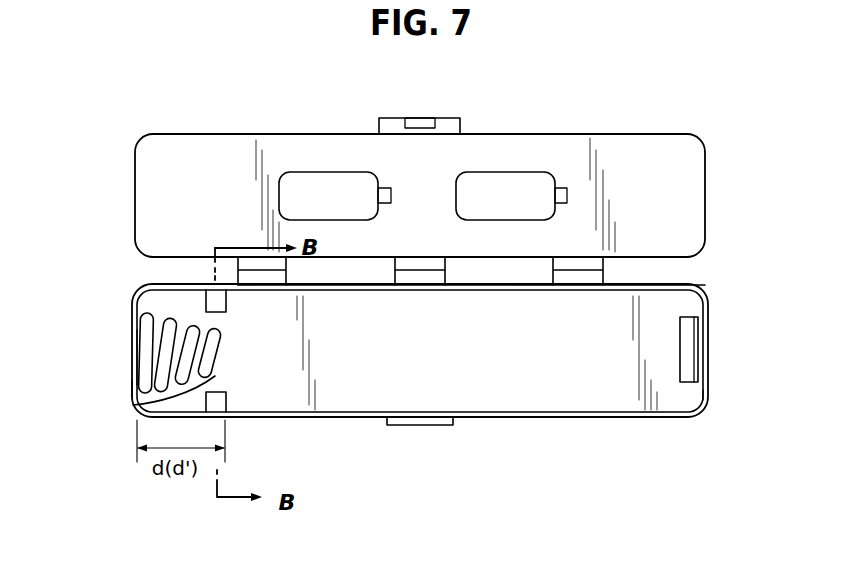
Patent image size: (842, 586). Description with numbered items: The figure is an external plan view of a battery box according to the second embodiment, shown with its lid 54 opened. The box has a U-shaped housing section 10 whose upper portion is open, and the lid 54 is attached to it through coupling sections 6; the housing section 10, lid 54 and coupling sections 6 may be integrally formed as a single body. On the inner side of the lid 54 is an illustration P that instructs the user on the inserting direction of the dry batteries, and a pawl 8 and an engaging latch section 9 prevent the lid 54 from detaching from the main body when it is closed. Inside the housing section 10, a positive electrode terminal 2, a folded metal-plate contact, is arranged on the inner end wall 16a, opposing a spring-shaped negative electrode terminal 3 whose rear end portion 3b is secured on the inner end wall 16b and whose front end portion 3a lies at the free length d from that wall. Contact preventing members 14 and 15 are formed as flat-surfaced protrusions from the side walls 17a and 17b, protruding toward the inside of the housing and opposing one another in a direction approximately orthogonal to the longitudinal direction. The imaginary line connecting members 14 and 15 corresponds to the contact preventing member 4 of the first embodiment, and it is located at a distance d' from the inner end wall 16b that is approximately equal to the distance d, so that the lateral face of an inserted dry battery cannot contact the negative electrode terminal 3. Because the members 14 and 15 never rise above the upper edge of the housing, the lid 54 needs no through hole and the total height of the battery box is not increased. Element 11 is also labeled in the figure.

The lid 54 is at (653, 147).
The pawl 8 is at (418, 118).
The illustration P is at (383, 187).
The side wall 17b is at (507, 285).
The coupling sections 6 is at (575, 277).
The positive electrode terminal 2 is at (689, 382).
The contact preventing member 14 is at (216, 300).
The contact preventing member 15 is at (217, 408).
The inner end wall 16b is at (149, 343).
The rear end portion 3b is at (150, 362).
The negative electrode terminal 3 is at (128, 399).
The front end portion 3a is at (134, 404).
The contact preventing member 4 is at (236, 335).
The housing section 10 is at (685, 311).
The inner end wall 16a is at (700, 395).
The bottom plate 11 is at (562, 430).
The side wall 17a is at (498, 418).
The engaging latch section 9 is at (423, 428).